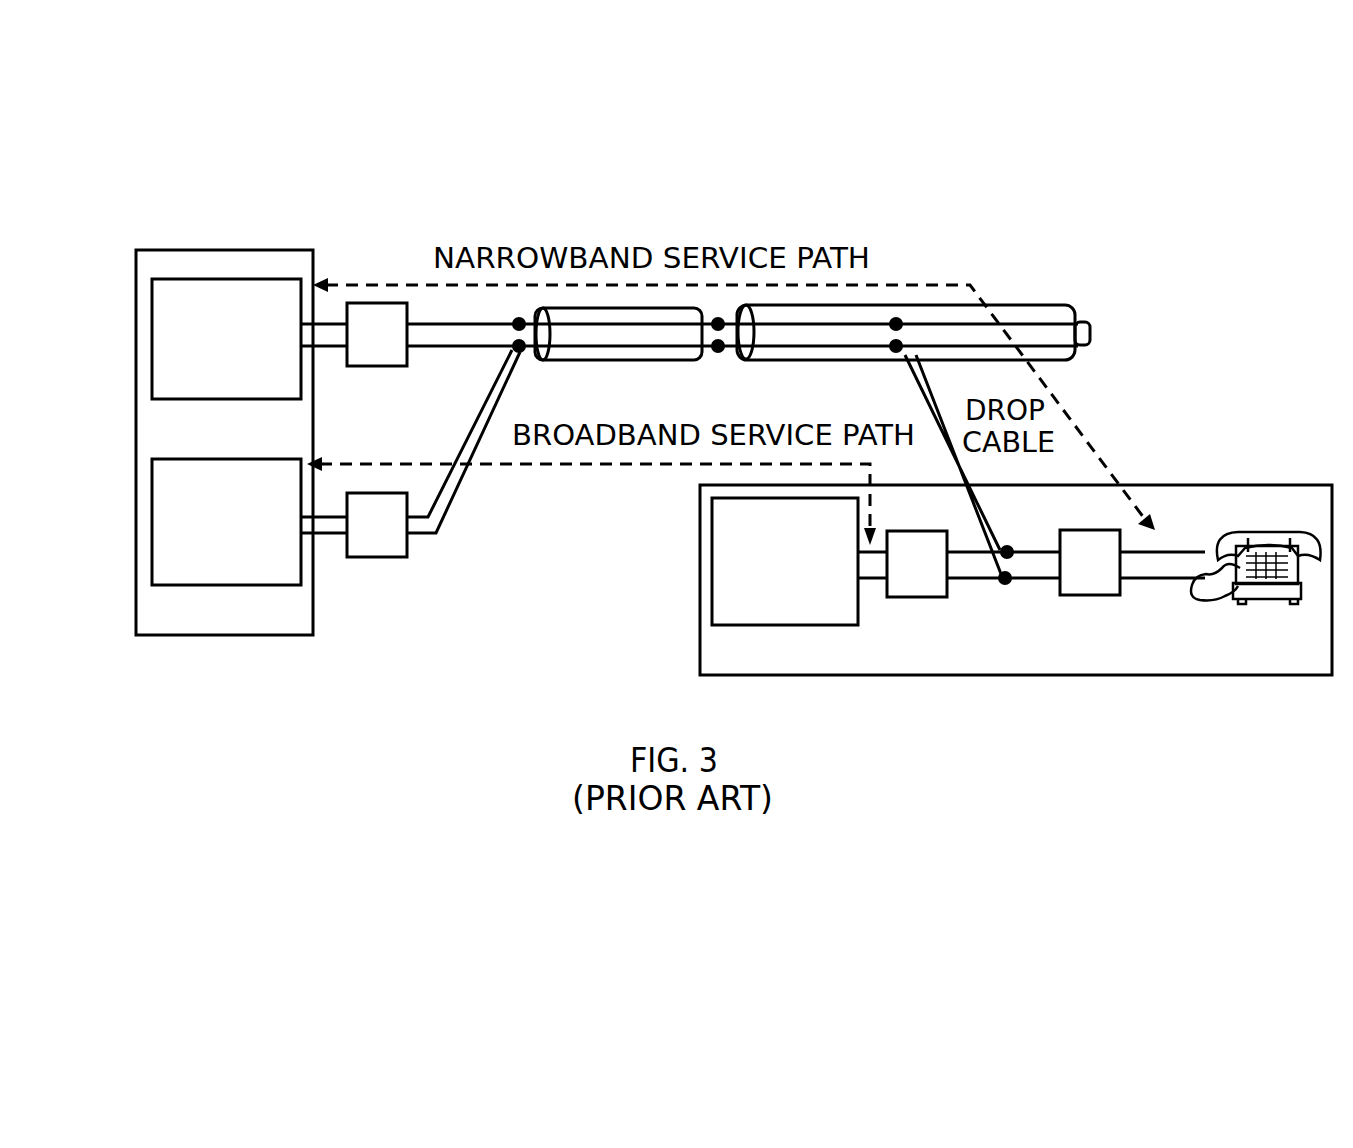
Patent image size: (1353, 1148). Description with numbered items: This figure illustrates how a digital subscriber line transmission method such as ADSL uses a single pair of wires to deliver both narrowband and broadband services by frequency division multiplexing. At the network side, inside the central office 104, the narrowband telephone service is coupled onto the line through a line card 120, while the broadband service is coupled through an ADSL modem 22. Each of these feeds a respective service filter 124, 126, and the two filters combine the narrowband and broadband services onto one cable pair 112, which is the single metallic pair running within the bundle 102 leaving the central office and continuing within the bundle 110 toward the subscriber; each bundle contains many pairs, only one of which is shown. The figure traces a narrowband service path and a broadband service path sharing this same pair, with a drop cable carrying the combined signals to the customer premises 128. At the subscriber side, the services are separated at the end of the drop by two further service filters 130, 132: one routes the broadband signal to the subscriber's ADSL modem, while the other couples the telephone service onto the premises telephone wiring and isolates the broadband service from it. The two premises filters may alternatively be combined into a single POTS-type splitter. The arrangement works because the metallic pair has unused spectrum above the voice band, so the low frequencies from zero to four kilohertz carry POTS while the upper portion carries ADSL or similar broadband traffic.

The ADSL modem 22 is at (152, 506).
The bundle 102 is at (563, 362).
The central office 104 is at (108, 568).
The bundle 110 is at (1018, 305).
The cable pair 112 is at (1089, 347).
The line card 120 is at (196, 279).
The service filter 124 is at (392, 303).
The service filter 126 is at (392, 493).
The customer premises 128 is at (1248, 485).
The service filter 130 is at (917, 597).
The service filter 132 is at (1105, 595).